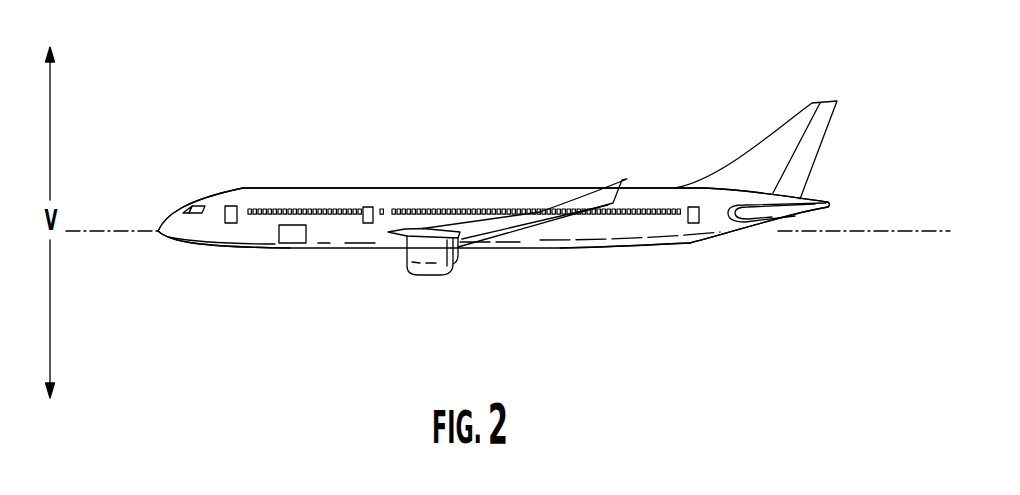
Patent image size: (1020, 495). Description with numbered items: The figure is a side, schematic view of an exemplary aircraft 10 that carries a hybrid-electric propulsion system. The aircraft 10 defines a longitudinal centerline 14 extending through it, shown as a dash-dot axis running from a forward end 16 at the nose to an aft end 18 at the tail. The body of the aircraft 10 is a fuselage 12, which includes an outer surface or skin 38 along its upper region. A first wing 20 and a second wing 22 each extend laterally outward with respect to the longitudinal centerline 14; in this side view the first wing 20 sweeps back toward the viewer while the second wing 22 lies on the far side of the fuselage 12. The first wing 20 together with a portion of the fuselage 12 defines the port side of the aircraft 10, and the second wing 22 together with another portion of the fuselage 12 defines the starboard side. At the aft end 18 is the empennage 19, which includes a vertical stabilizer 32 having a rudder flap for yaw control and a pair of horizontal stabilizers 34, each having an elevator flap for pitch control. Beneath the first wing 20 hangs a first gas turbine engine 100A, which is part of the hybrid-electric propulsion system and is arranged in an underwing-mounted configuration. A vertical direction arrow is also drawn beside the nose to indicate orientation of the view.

The aircraft 10 is at (485, 197).
The fuselage 12 is at (258, 238).
The longitudinal centerline 14 is at (93, 231).
The forward end 16 is at (156, 258).
The aft end 18 is at (752, 260).
The empennage 19 is at (734, 178).
The first wing 20 is at (557, 218).
The second wing 22 is at (613, 256).
The vertical stabilizer 32 is at (785, 133).
The horizontal stabilizer 34 is at (790, 208).
The outer surface or skin 38 is at (386, 178).
The first gas turbine engine 100A is at (414, 287).